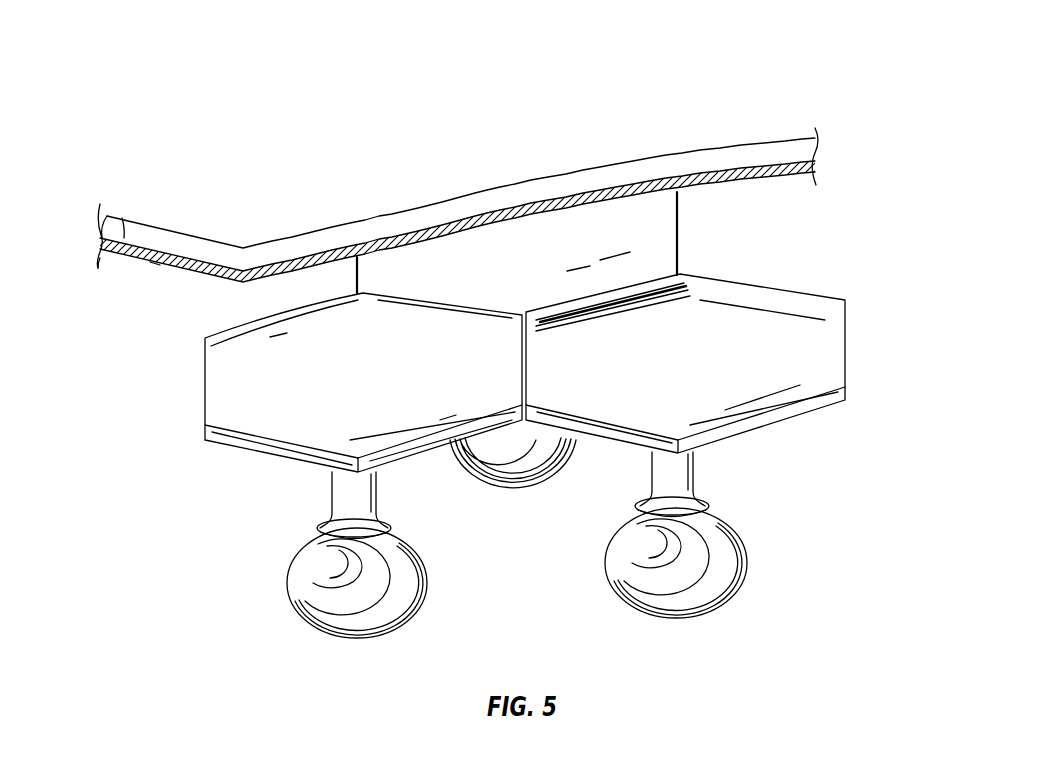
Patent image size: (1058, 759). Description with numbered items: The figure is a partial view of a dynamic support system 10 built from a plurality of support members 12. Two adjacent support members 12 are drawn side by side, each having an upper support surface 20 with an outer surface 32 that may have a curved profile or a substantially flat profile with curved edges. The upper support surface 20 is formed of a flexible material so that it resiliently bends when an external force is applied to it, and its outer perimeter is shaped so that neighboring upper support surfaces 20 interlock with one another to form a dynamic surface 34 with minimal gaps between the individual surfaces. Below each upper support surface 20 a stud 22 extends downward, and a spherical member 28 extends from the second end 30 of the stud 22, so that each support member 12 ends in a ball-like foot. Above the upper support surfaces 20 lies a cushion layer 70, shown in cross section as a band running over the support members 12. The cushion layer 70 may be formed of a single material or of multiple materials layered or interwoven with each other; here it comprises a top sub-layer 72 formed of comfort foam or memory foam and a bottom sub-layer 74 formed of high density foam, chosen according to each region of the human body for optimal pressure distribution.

The dynamic support system 10 is at (140, 121).
The support member 12 is at (208, 408).
The upper support surface 20 is at (233, 423).
The stud 22 is at (372, 487).
The spherical member 28 is at (357, 636).
The second end 30 is at (325, 524).
The outer surface 32 is at (574, 343).
The dynamic surface 34 is at (639, 280).
The cushion layer 70 is at (116, 213).
The top sub-layer 72 is at (98, 267).
The bottom sub-layer 74 is at (158, 266).